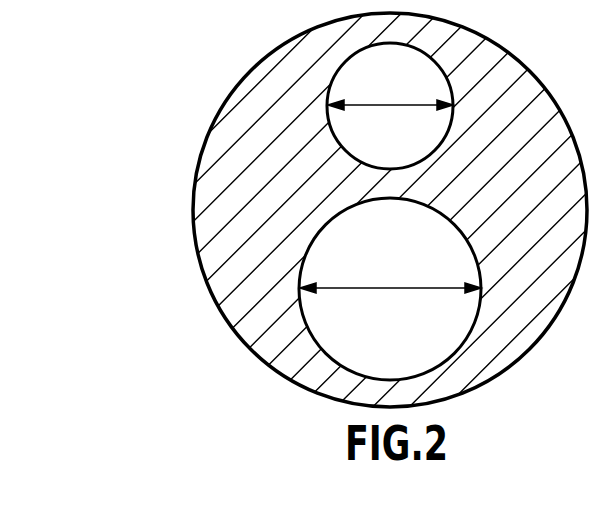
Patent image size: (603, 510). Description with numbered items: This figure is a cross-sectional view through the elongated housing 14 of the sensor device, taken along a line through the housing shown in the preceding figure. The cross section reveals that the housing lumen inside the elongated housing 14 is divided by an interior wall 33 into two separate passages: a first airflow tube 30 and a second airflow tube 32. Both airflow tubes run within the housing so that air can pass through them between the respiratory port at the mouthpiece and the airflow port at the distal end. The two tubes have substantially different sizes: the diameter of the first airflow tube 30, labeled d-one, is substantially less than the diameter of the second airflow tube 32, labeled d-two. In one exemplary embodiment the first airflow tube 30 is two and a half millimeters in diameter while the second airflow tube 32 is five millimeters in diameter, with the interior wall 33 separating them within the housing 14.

The elongated housing 14 is at (193, 211).
The first airflow tube 30 is at (409, 146).
The second airflow tube 32 is at (409, 343).
The interior wall 33 is at (388, 183).